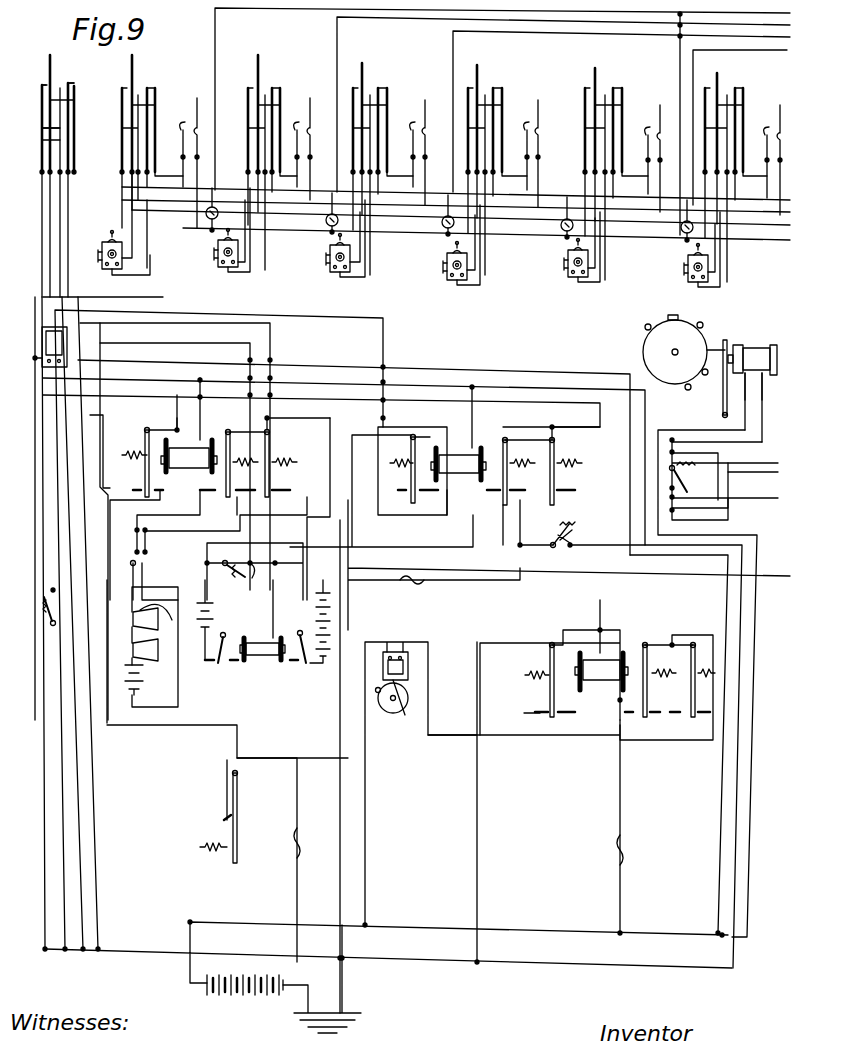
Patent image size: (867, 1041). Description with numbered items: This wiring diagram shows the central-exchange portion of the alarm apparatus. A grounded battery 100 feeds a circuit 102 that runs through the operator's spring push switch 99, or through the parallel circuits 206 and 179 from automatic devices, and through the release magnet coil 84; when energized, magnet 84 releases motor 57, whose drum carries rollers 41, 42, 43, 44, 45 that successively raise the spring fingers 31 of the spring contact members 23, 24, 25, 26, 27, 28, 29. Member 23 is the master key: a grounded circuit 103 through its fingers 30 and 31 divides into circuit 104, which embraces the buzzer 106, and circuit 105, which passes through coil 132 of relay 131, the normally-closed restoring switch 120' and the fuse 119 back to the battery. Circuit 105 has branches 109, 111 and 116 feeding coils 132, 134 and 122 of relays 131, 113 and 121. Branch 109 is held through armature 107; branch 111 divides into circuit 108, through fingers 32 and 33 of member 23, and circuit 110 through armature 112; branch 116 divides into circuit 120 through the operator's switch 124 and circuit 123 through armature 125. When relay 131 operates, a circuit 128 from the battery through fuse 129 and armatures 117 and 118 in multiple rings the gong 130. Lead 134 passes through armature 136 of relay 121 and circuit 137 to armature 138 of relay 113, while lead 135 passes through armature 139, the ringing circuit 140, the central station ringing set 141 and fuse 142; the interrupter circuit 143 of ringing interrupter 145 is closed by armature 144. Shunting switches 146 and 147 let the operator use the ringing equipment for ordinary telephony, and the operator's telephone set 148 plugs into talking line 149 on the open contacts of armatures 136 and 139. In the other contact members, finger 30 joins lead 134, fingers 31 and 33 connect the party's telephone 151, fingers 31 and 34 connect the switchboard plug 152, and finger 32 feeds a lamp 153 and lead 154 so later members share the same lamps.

The spring contact member 23 is at (74, 153).
The spring contact member 24 is at (730, 132).
The spring contact member 25 is at (262, 125).
The spring contact member 26 is at (375, 128).
The spring contact member 27 is at (490, 128).
The spring contact member 28 is at (608, 130).
The relay contact bank 29 is at (145, 135).
The finger 30 is at (45, 92).
The spring finger 31 is at (52, 72).
The finger 32 is at (55, 122).
The finger 33 is at (60, 145).
The finger 34 is at (75, 105).
The roller 41 is at (645, 322).
The roller 42 is at (672, 315).
The roller 43 is at (700, 320).
The distributor contact 44 is at (686, 384).
The distributor contact 45 is at (703, 370).
The motor 57 is at (645, 340).
The release magnet coil 84 is at (752, 347).
The spring push switch 99 is at (680, 470).
The battery 100 is at (260, 968).
The circuit 102 is at (745, 390).
The grounded circuit 103 is at (37, 262).
The circuit 104 is at (135, 352).
The circuit 105 is at (35, 380).
The buzzer 106 is at (58, 340).
The armature 107 is at (533, 695).
The circuit 108 is at (58, 204).
The branch circuit 109 is at (530, 680).
The circuit 110 is at (370, 450).
The branch circuit 111 is at (478, 425).
The armature 112 is at (411, 485).
The relay 113 is at (458, 500).
The branch circuit 116 is at (195, 404).
The armature 117 is at (655, 660).
The armature 118 is at (692, 697).
The fuse 119 is at (315, 845).
The circuit 120 is at (196, 630).
The restoring switch 120' is at (261, 810).
The relay 121 is at (190, 475).
The electromagnet coil 122 is at (202, 445).
The circuit 123 is at (85, 545).
The spring push switch 124 is at (42, 608).
The armature 125 is at (145, 443).
The circuit 128 is at (448, 735).
The fuse 129 is at (612, 836).
The gong 130 is at (405, 720).
The relay 131 is at (585, 725).
The electromagnet coil 132 is at (605, 665).
The lead 134 is at (160, 297).
The lead 135 is at (183, 310).
The armature 136 is at (232, 464).
The circuit 137 is at (330, 448).
The armature 138 is at (574, 465).
The armature 139 is at (268, 487).
The ringing circuit 140 is at (272, 505).
The central station ringing set 141 is at (318, 665).
The fuse 142 is at (405, 582).
The interrupter circuit 143 is at (528, 530).
The armature 144 is at (518, 492).
The ringing interrupter 145 is at (250, 660).
The shunting switch 146 is at (228, 575).
The shunting switch 147 is at (560, 545).
The telephone set 148 is at (145, 640).
The talking line 149 is at (242, 513).
The party's telephone 151 is at (110, 247).
The switchboard plug 152 is at (481, 155).
The lamp 153 is at (215, 218).
The lead 154 is at (567, 32).
The parallel circuit 179 is at (733, 492).
The parallel circuit 206 is at (732, 455).